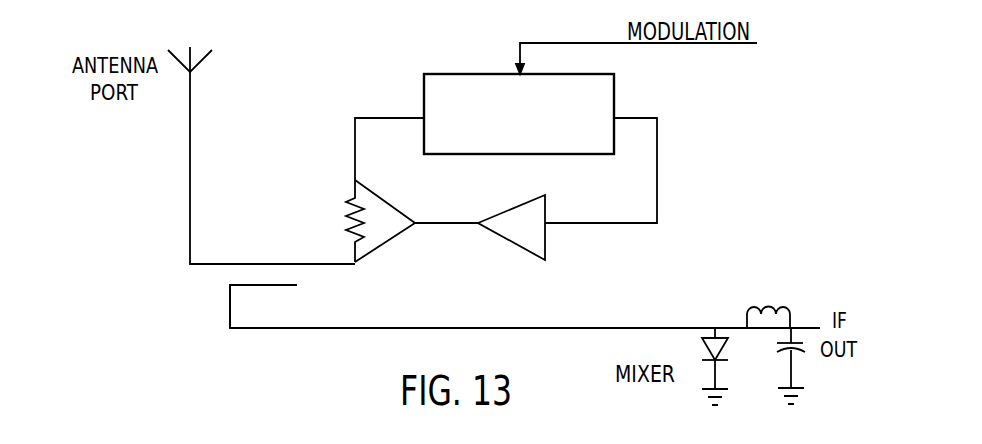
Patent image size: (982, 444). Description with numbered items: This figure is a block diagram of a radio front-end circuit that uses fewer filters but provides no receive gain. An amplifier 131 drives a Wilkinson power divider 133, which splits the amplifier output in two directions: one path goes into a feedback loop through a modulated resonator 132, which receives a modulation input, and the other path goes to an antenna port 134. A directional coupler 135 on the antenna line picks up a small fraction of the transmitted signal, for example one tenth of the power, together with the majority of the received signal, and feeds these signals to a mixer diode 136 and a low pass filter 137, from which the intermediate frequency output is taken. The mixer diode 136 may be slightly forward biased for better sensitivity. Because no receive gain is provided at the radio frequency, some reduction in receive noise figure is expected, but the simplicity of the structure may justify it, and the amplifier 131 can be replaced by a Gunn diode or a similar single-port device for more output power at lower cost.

The amplifier 131 is at (525, 252).
The modulated resonator 132 is at (538, 110).
The Wilkinson power divider 133 is at (375, 238).
The antenna port 134 is at (190, 88).
The directional coupler 135 is at (278, 287).
The mixer diode 136 is at (723, 350).
The low pass filter 137 is at (802, 328).